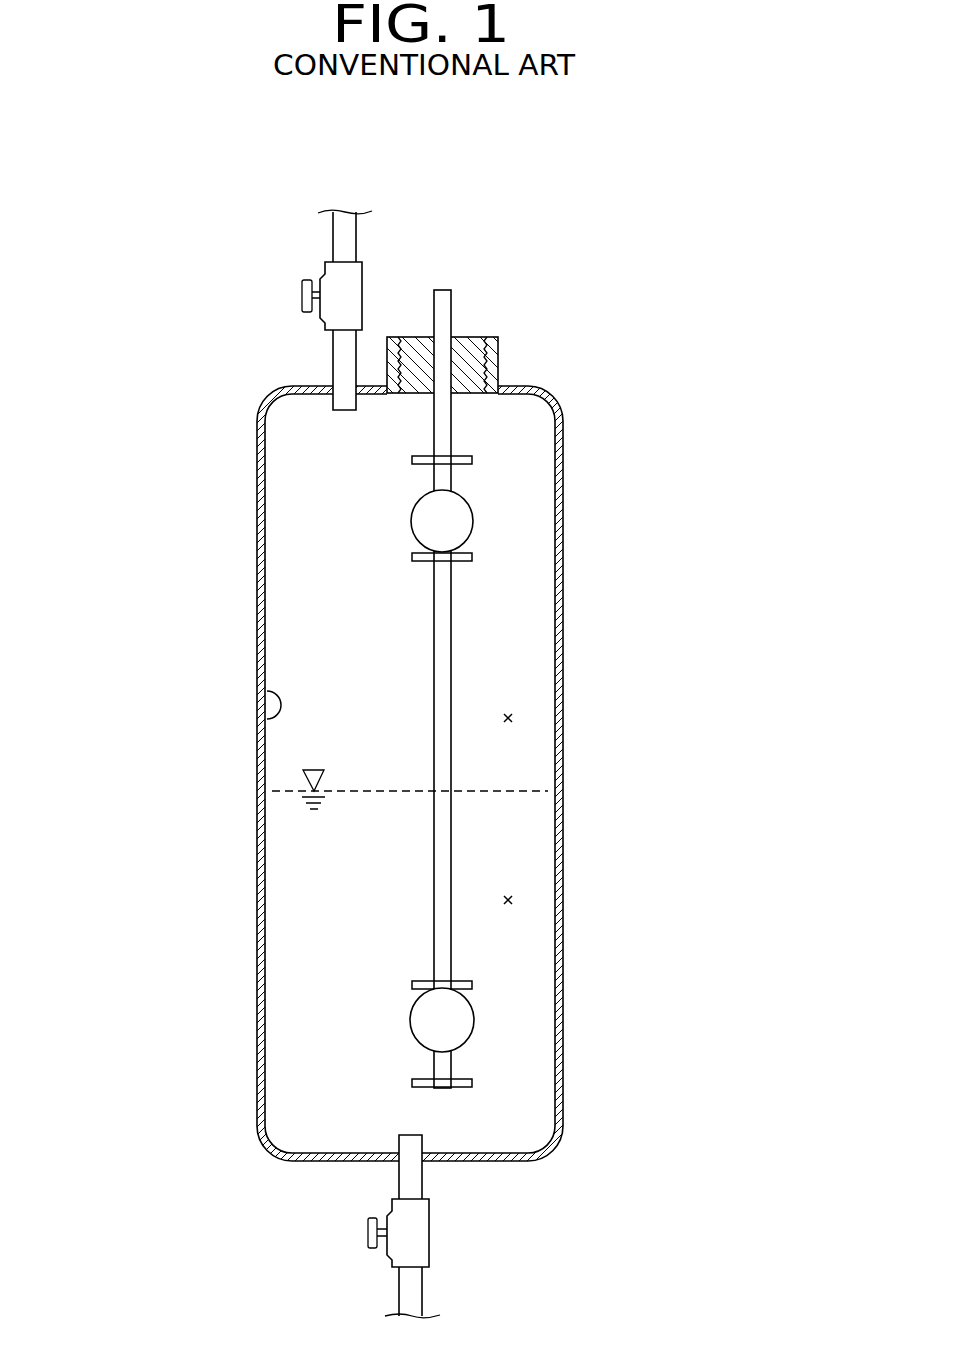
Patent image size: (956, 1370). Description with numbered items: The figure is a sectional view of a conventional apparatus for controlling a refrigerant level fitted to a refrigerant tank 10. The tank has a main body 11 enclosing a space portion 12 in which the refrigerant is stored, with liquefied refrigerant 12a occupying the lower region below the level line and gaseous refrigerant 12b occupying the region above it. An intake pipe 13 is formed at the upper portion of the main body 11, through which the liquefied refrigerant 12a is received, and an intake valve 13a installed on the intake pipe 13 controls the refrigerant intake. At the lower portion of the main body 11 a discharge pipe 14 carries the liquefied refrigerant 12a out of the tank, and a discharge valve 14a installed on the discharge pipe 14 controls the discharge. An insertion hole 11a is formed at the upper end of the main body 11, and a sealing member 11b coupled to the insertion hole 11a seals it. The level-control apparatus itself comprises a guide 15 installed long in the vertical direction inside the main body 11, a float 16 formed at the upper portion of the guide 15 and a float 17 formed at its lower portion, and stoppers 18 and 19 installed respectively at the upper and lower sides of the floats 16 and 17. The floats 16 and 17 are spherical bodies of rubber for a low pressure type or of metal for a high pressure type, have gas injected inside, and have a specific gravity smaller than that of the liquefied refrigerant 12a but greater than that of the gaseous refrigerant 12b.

The refrigerant tank 10 is at (152, 308).
The main body 11 is at (257, 520).
The insertion hole 11a is at (490, 372).
The sealing member 11b is at (467, 348).
The space portion 12 is at (259, 718).
The liquefied refrigerant 12a is at (512, 900).
The gaseous refrigerant 12b is at (512, 718).
The intake pipe 13 is at (343, 358).
The intake valve 13a is at (340, 271).
The discharge pipe 14 is at (407, 1183).
The discharge valve 14a is at (407, 1243).
The guide 15 is at (444, 634).
The float 16 is at (463, 536).
The float 17 is at (467, 1018).
The stopper 18 is at (420, 558).
The stopper 19 is at (413, 985).